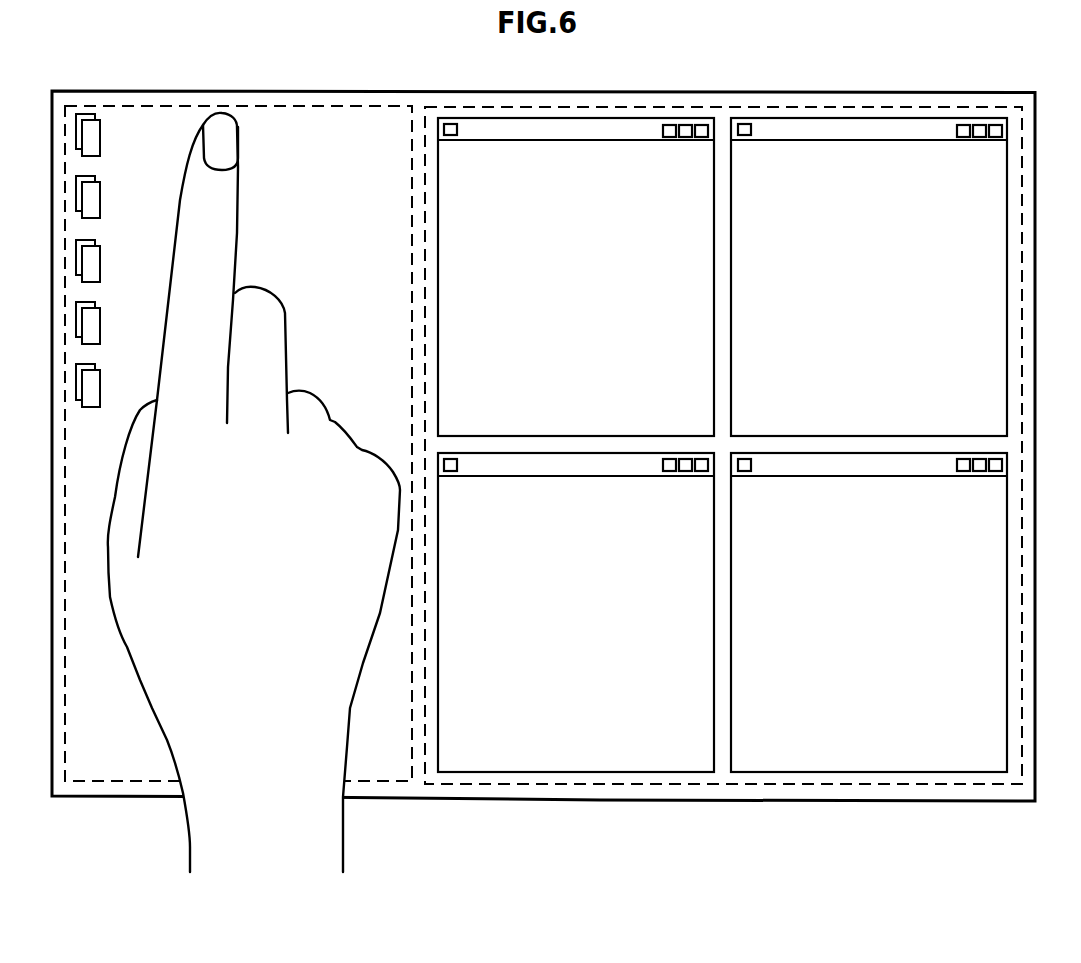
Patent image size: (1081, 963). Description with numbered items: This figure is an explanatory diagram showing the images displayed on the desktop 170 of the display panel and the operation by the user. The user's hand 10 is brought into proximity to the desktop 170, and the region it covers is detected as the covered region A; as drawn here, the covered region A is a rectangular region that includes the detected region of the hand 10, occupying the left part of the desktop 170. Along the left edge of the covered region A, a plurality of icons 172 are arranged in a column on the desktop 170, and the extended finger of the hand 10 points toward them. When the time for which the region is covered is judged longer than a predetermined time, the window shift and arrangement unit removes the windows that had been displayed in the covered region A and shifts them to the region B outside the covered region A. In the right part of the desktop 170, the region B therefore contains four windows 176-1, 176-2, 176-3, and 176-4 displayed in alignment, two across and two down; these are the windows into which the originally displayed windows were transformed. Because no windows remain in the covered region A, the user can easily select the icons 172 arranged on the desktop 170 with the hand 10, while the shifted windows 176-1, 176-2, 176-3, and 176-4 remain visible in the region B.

The user's hand 10 is at (165, 738).
The desktop 170 is at (328, 91).
The icons 172 is at (87, 112).
The window 176-1 is at (627, 117).
The window 176-2 is at (870, 117).
The window 176-3 is at (627, 773).
The window 176-4 is at (870, 773).
The covered region A is at (387, 783).
The region outside covered region B is at (502, 785).